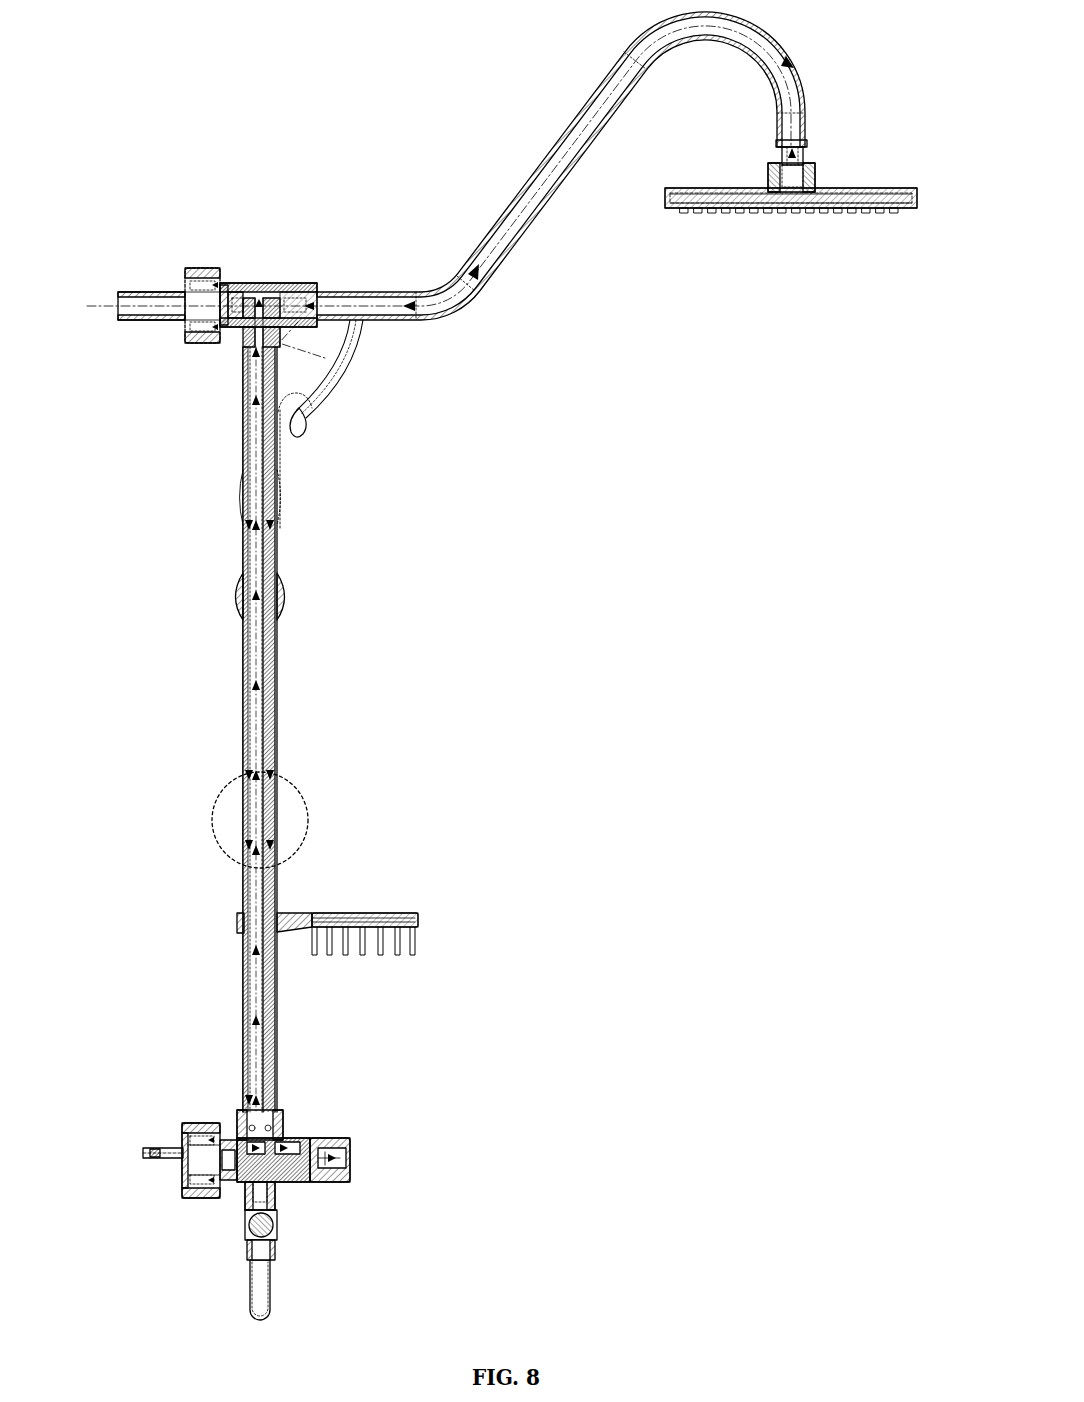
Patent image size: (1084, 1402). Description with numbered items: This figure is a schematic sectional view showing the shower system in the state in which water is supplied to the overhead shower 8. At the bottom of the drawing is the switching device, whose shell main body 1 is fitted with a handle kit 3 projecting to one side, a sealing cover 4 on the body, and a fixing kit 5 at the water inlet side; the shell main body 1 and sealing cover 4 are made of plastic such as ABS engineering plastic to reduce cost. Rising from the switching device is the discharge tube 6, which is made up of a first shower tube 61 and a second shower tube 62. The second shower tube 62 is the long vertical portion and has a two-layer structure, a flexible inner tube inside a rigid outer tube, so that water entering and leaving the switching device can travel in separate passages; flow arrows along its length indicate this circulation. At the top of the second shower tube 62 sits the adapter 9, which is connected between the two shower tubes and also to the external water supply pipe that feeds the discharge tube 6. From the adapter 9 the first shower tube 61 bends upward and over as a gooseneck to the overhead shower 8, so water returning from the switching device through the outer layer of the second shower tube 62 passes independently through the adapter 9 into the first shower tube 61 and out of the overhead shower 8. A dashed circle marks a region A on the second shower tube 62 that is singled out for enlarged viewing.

The shell main body 1 is at (287, 1137).
The handle kit 3 is at (357, 1157).
The sealing cover 4 is at (230, 1178).
The fixing kit 5 is at (202, 1122).
The discharge tube 6 is at (253, 729).
The first shower tube 61 is at (517, 236).
The second shower tube 62 is at (277, 677).
The overhead shower 8 is at (753, 213).
The adapter 9 is at (262, 283).
The enlarged detail region A is at (315, 818).